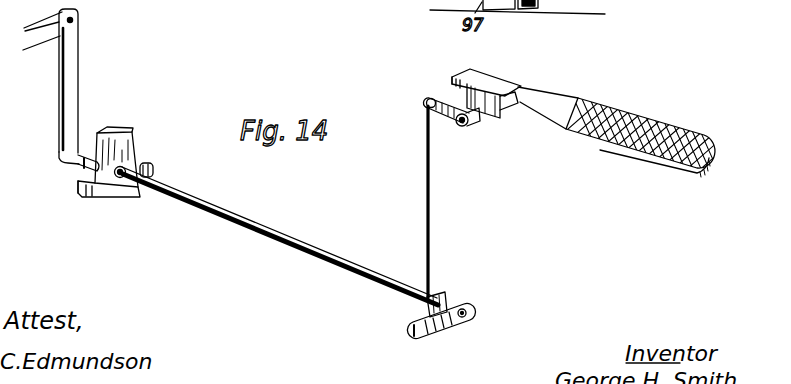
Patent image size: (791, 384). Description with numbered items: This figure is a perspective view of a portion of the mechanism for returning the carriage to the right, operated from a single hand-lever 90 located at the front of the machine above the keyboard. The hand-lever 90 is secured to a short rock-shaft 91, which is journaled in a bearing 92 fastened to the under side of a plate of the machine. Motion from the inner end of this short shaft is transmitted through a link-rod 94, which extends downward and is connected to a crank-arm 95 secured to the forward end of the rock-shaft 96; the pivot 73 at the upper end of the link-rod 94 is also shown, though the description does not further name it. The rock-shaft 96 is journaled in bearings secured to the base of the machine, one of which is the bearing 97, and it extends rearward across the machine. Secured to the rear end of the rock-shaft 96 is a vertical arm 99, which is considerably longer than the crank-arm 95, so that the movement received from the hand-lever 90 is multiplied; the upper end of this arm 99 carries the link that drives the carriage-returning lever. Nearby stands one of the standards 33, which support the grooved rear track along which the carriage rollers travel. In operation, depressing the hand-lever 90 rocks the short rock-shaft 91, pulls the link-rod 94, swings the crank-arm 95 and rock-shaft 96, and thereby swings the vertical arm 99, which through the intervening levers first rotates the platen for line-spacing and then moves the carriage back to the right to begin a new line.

The vertical arm 99 is at (66, 90).
The standards 33 is at (107, 133).
The rock-shaft 96 is at (367, 273).
The link-rod 94 is at (430, 204).
The pivot pin 73 is at (435, 99).
The short rock-shaft 91 is at (459, 129).
The bearing 92 is at (485, 120).
The hand-lever 90 is at (627, 150).
The crank-arm 95 is at (445, 328).
The bearing 97 is at (440, 300).